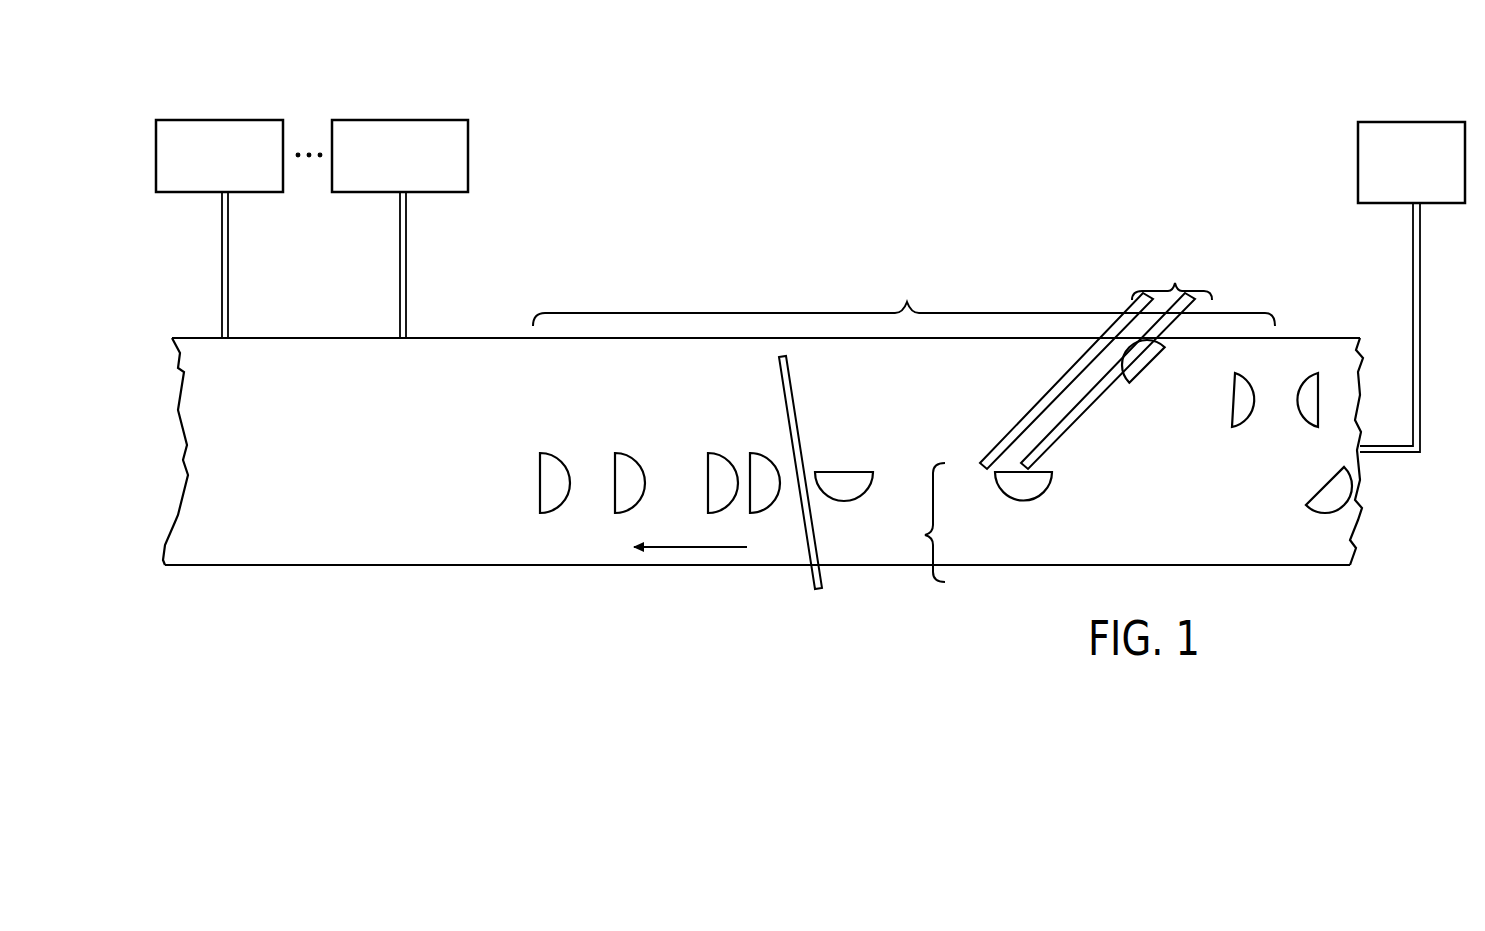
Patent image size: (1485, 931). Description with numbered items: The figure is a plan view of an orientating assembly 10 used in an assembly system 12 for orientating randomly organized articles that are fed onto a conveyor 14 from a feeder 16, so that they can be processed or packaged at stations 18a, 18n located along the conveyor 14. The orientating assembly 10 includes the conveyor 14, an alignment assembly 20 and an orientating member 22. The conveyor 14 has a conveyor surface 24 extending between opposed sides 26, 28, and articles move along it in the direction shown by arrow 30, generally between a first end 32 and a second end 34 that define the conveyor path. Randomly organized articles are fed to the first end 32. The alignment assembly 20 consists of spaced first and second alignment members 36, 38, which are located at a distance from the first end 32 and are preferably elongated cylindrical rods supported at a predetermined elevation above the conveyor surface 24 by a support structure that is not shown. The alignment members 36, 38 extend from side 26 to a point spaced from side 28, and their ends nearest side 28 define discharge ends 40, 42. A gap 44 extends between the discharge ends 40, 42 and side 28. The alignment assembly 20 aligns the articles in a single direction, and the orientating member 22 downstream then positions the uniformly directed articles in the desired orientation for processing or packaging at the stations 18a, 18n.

The orientating assembly 10 is at (1041, 308).
The assembly system 12 is at (806, 251).
The conveyor 14 is at (503, 332).
The feeder 16 is at (1431, 105).
The station 18a is at (408, 115).
The station 18n is at (215, 115).
The alignment assembly 20 is at (1097, 357).
The orientating member 22 is at (808, 437).
The conveyor surface 24 is at (397, 459).
The side 26 is at (935, 338).
The side 28 is at (881, 566).
The arrow 30 is at (705, 547).
The first end 32 is at (1253, 484).
The second end 34 is at (243, 552).
The first alignment member 36 is at (1052, 443).
The second alignment member 38 is at (1011, 430).
The discharge end 40 is at (1055, 478).
The discharge end 42 is at (979, 469).
The gap 44 is at (925, 535).